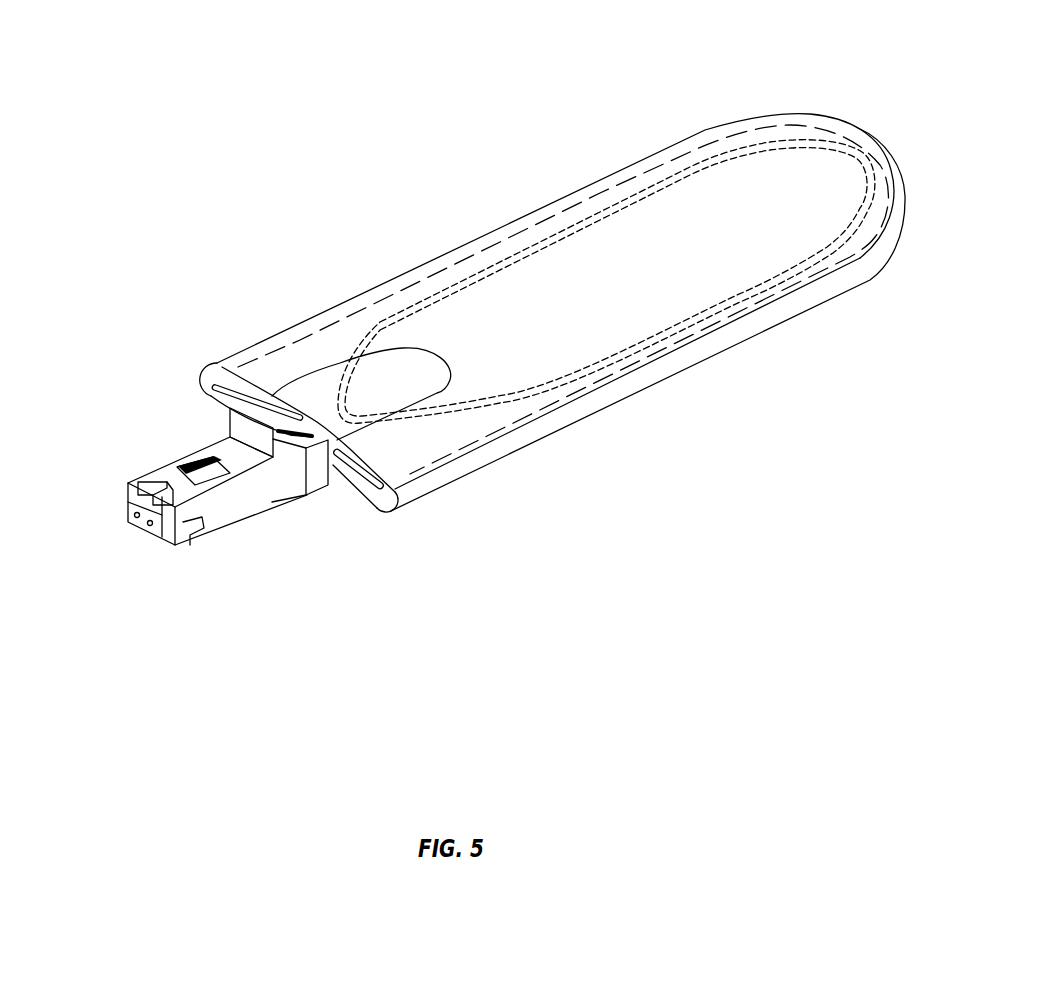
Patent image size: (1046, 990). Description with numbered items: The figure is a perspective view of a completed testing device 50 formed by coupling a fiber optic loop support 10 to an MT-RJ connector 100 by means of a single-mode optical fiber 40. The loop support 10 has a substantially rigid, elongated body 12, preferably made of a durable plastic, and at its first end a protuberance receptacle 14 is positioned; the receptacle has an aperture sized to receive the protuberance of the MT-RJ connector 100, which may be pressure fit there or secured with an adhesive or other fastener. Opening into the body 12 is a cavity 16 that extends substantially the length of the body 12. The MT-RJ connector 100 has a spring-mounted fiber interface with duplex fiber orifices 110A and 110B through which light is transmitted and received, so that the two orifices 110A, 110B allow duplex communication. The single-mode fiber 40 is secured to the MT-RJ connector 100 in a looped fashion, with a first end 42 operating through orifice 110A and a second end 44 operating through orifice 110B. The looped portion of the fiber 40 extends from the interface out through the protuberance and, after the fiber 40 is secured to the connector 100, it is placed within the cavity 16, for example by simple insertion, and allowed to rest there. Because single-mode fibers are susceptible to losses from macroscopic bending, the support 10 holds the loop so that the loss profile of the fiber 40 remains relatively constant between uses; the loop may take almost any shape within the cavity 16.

The testing device 50 is at (558, 93).
The fiber optic loop support 10 is at (699, 116).
The body 12 is at (590, 228).
The protuberance receptacle 14 is at (423, 365).
The cavity 16 is at (868, 262).
The single-mode optical fiber 40 is at (855, 135).
The first end 42 is at (342, 412).
The second end 44 is at (400, 420).
The MT-RJ connector 100 is at (190, 508).
The fiber orifice 110A is at (137, 519).
The fiber orifice 110B is at (150, 527).